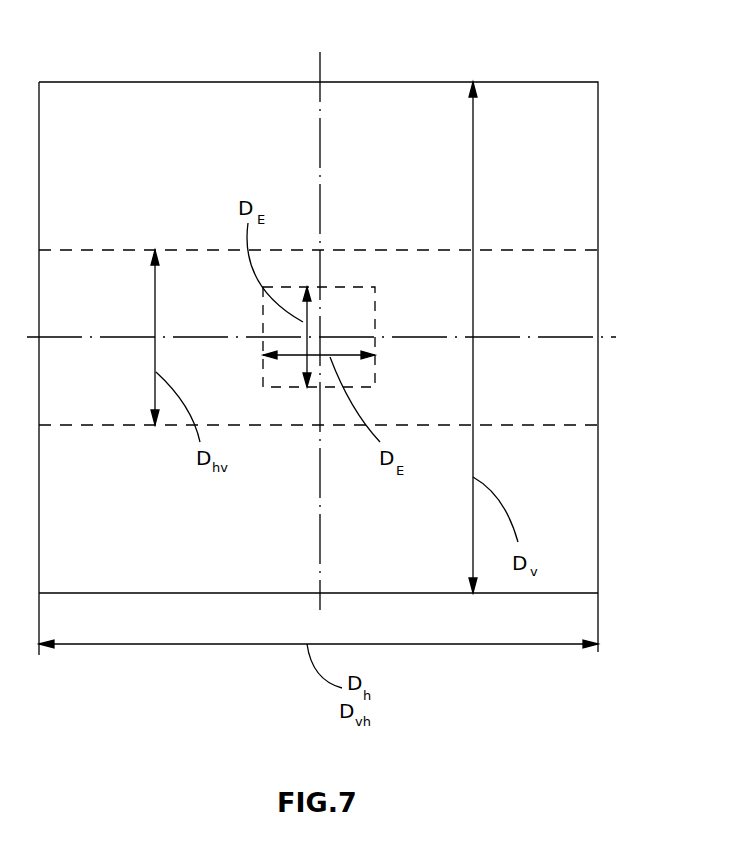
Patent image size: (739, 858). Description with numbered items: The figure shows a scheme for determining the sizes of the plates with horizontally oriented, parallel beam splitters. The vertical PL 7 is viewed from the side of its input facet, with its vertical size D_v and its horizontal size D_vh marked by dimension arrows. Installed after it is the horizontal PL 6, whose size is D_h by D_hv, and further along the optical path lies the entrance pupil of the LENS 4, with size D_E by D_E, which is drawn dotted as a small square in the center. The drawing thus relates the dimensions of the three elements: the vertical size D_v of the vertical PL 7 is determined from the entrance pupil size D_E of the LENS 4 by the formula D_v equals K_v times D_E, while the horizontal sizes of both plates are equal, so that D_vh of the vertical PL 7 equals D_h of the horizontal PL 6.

The LENS 4 is at (330, 286).
The horizontal PL 6 is at (516, 248).
The vertical PL 7 is at (600, 463).